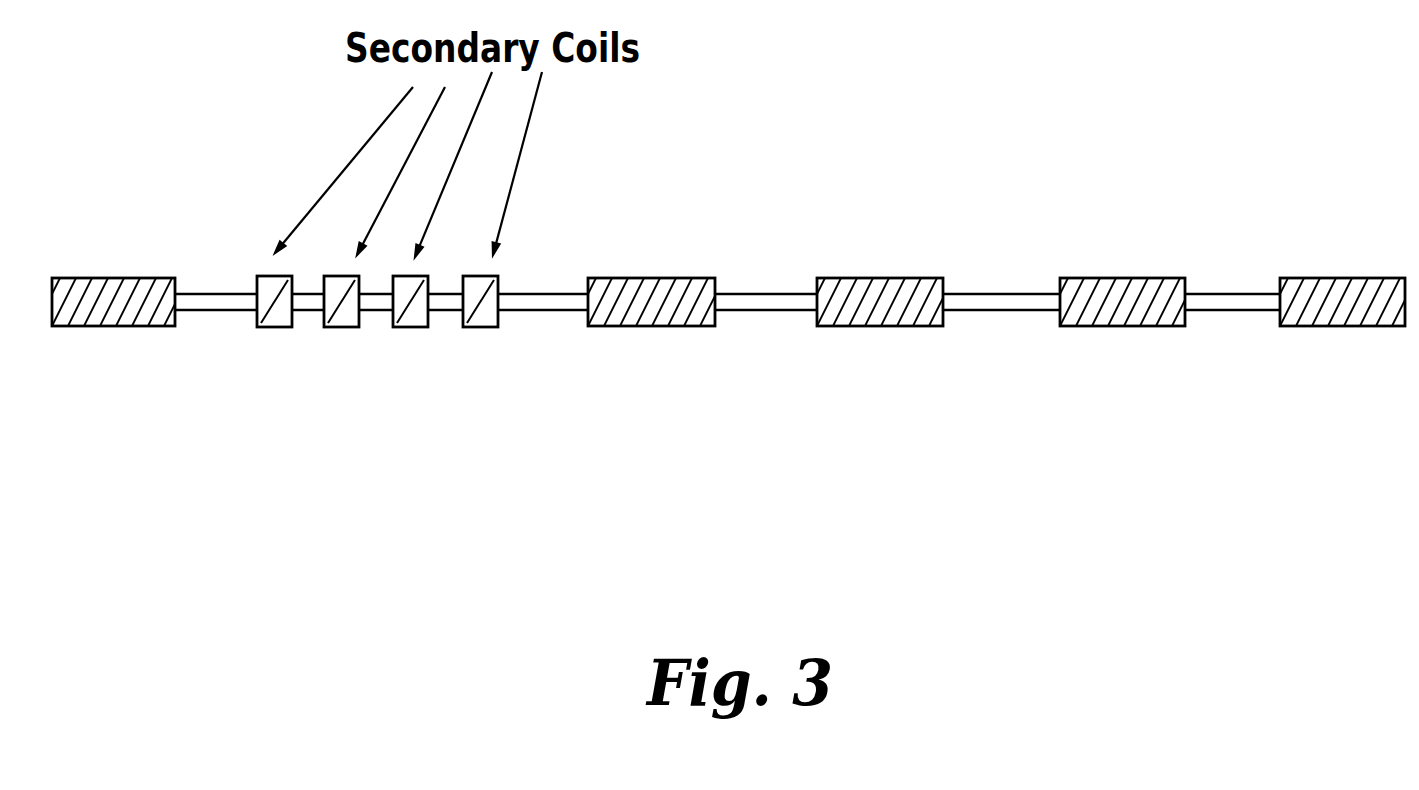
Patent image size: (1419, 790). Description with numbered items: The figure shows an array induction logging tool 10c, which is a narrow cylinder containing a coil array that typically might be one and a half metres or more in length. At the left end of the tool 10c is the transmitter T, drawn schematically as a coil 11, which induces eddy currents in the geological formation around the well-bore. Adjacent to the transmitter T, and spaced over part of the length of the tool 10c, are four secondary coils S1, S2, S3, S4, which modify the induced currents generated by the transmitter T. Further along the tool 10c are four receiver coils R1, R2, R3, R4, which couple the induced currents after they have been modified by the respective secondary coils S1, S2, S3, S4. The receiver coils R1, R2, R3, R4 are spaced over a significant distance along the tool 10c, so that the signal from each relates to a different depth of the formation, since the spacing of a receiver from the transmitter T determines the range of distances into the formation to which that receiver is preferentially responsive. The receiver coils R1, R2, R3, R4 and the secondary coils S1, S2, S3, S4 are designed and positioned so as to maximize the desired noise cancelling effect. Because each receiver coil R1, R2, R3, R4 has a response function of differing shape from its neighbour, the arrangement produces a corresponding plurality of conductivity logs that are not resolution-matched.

The coil 11 is at (118, 275).
The transmitter T is at (113, 339).
The array tool 10c is at (772, 303).
The secondary coil S1 is at (273, 327).
The secondary coil S2 is at (342, 327).
The secondary coil S3 is at (412, 327).
The secondary coil S4 is at (480, 327).
The receiver coil R1 is at (660, 327).
The receiver coil R2 is at (887, 327).
The receiver coil R3 is at (1130, 327).
The receiver coil R4 is at (1350, 327).